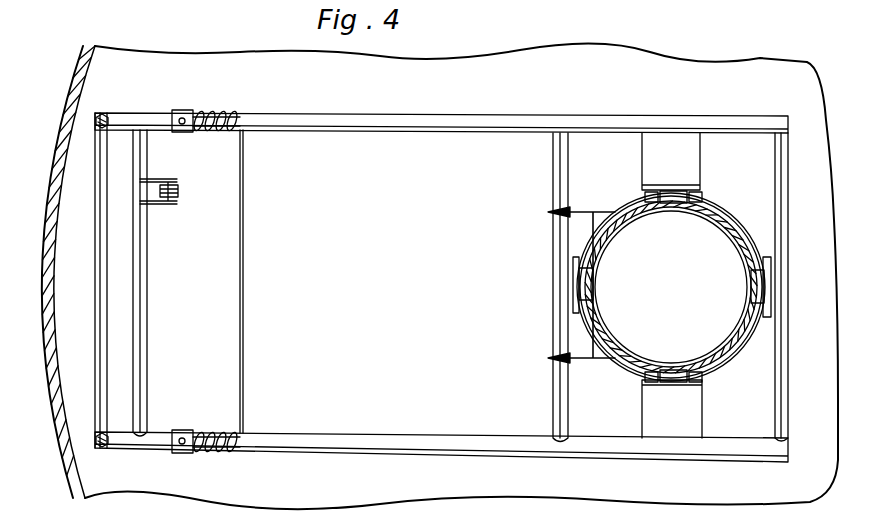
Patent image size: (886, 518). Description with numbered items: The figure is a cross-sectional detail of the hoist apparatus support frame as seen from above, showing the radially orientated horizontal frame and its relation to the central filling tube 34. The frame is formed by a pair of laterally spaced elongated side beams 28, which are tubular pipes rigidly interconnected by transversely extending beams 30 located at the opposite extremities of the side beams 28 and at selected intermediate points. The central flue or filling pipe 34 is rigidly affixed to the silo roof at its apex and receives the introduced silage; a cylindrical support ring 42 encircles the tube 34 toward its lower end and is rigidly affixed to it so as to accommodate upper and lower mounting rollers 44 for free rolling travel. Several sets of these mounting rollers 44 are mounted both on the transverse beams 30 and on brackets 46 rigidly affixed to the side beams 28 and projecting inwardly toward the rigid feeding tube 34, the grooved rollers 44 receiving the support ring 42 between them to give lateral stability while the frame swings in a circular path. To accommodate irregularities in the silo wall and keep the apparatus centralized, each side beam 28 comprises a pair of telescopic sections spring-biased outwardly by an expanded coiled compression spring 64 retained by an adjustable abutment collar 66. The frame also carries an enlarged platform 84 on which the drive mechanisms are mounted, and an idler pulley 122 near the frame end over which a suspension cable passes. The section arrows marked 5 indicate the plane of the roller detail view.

The side beams 28 is at (587, 122).
The transverse beams 30 is at (138, 333).
The platform 84 is at (242, 307).
The adjustable abutment collar 66 is at (173, 113).
The coiled compression spring 64 is at (212, 111).
The idler pulley 122 is at (178, 195).
The bracket 46 is at (652, 157).
The central flue or filling pipe 34 is at (733, 245).
The cylindrical support ring 42 is at (737, 357).
The mounting rollers 44 is at (763, 297).
The section line 5- 5 is at (581, 287).